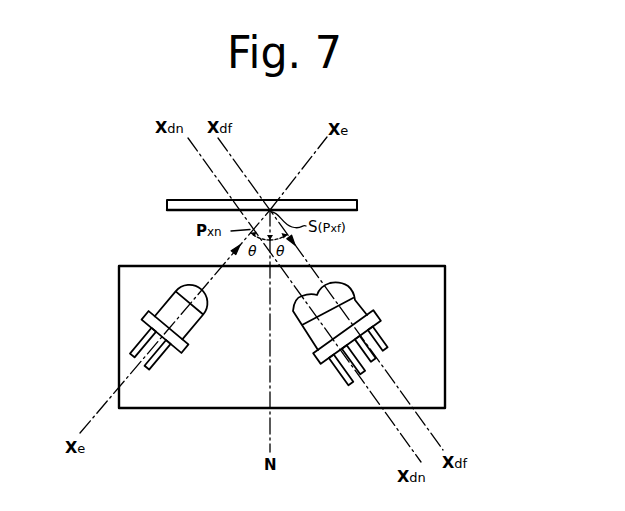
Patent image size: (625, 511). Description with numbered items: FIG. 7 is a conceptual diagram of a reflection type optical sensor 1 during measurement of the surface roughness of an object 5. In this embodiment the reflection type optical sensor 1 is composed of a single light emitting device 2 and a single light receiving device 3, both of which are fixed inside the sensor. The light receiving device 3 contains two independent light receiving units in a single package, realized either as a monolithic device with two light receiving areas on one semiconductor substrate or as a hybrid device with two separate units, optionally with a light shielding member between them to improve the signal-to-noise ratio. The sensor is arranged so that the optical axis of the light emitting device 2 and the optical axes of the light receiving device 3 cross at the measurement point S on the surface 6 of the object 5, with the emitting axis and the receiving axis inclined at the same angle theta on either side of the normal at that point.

The reflection type optical sensor 1 is at (419, 266).
The light emitting device 2 is at (160, 305).
The light receiving device 3 is at (360, 298).
The object 5 is at (190, 200).
The surface 6 is at (187, 210).